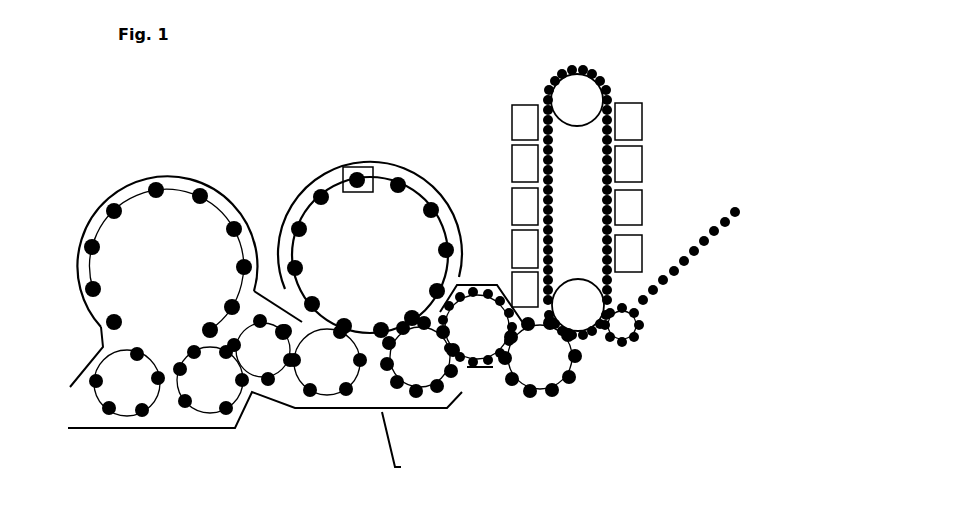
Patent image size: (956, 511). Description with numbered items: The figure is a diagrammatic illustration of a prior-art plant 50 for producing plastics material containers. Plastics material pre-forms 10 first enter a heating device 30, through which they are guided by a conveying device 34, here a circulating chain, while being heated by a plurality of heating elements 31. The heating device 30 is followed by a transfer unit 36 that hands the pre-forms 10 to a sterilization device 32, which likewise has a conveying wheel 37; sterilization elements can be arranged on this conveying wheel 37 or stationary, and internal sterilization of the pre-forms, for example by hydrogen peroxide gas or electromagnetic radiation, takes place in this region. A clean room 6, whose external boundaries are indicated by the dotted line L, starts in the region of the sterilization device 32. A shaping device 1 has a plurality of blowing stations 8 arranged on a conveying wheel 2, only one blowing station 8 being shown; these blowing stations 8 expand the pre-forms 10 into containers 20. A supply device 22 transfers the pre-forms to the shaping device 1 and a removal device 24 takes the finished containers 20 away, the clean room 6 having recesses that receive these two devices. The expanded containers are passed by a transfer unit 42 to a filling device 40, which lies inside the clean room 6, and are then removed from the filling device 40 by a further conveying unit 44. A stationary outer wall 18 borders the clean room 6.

The shaping device 1 is at (352, 135).
The conveying wheel 2 is at (413, 237).
The clean room 6 is at (307, 160).
The blowing station 8 is at (368, 165).
The plastics material pre-form 10 is at (650, 297).
The wall 18 is at (414, 170).
The container 20 is at (360, 410).
The supply device 22 is at (445, 372).
The removal device 24 is at (323, 390).
The heating device 30 is at (535, 68).
The heating element 31 is at (523, 118).
The sterilization device 32 is at (481, 255).
The conveying device 34 is at (585, 92).
The transfer unit 36 is at (532, 368).
The conveying wheel 37 is at (477, 343).
The filling device 40 is at (142, 215).
The transfer unit 42 is at (232, 380).
The conveying unit 44 is at (112, 390).
The plant 50 is at (294, 68).